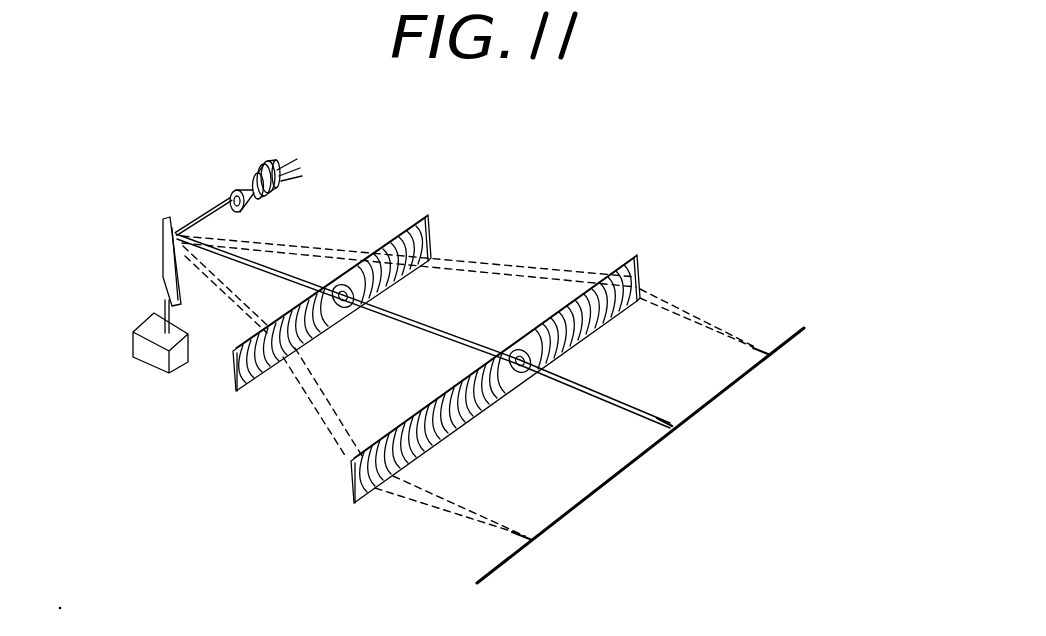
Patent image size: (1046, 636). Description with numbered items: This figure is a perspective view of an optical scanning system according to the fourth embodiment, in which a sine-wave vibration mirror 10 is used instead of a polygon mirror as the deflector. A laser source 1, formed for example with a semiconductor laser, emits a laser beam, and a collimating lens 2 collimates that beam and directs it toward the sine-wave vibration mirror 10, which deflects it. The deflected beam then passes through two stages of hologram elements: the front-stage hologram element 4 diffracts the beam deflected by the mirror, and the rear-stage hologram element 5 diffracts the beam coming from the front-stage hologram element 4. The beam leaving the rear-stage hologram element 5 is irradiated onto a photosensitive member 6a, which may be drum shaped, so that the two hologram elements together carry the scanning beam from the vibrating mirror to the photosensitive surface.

The laser source 1 is at (267, 162).
The collimating lens 2 is at (235, 190).
The front-stage hologram element 4 is at (428, 219).
The rear-stage hologram element 5 is at (641, 258).
The photosensitive member 6a is at (702, 405).
The sine-wave vibration mirror 10 is at (162, 259).